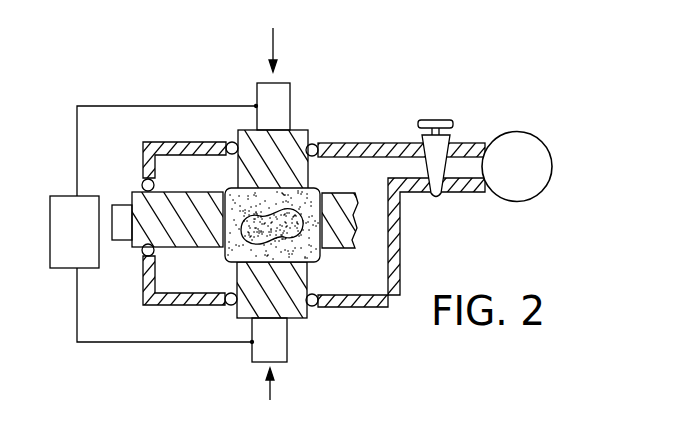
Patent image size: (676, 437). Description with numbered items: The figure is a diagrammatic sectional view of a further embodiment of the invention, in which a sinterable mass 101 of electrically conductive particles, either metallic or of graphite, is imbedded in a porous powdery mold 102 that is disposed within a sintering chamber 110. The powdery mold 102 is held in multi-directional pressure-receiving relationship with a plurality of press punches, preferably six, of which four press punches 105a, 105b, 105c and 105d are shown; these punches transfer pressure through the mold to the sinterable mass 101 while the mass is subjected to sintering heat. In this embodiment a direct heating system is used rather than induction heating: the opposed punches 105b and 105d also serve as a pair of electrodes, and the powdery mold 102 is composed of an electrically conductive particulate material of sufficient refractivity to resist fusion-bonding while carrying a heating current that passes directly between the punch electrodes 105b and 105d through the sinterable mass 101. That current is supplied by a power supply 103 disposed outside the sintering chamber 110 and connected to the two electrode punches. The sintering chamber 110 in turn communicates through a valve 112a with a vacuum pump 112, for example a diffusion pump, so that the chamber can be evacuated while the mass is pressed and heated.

The sinterable mass 101 is at (230, 255).
The porous powdery mold 102 is at (318, 253).
The power supply 103 is at (62, 266).
The press punch 105a is at (127, 242).
The press punch 105b is at (298, 318).
The press punch 105c is at (355, 228).
The press punch 105d is at (293, 137).
The sintering chamber 110 is at (363, 163).
The vacuum pump 112 is at (553, 182).
The valve 112a is at (520, 118).